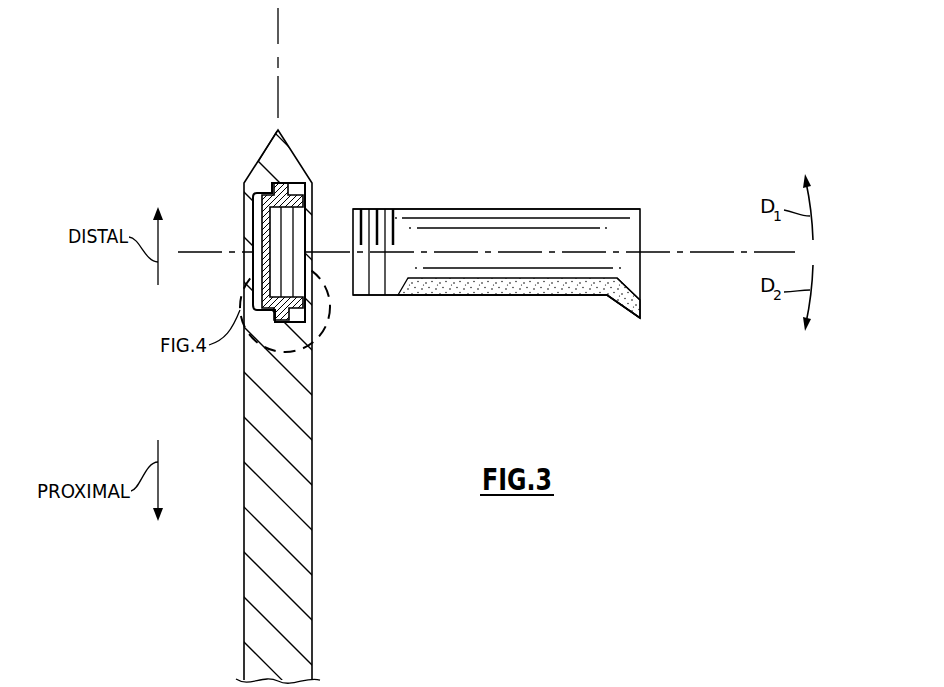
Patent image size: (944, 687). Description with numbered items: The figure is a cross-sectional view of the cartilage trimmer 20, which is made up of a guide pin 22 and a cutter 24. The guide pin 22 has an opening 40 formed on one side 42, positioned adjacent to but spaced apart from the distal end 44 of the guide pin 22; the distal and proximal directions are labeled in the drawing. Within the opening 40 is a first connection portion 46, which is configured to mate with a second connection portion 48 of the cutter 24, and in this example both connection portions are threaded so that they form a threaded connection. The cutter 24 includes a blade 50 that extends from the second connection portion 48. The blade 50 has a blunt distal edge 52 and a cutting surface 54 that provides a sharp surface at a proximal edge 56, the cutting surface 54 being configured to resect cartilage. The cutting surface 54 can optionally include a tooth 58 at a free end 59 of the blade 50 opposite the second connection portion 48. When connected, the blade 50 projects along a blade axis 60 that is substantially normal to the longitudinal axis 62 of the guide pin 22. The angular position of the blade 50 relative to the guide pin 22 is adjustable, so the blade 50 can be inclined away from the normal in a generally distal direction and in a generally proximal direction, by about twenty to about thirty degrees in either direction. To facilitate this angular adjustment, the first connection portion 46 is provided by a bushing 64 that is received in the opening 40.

The cartilage trimmer 20 is at (398, 540).
The guide pin 22 is at (313, 590).
The cutter 24 is at (576, 207).
The opening 40 is at (314, 222).
The side 42 is at (313, 438).
The distal end 44 is at (279, 131).
The first connection portion 46 is at (277, 232).
The second connection portion 48 is at (377, 296).
The blade 50 is at (622, 240).
The blunt distal edge 52 is at (485, 209).
The cutting surface 54 is at (540, 288).
The proximal edge 56 is at (498, 296).
The tooth 58 is at (628, 303).
The free end 59 is at (641, 277).
The blade axis 60 is at (703, 256).
The longitudinal axis 62 is at (278, 45).
The bushing 64 is at (308, 298).